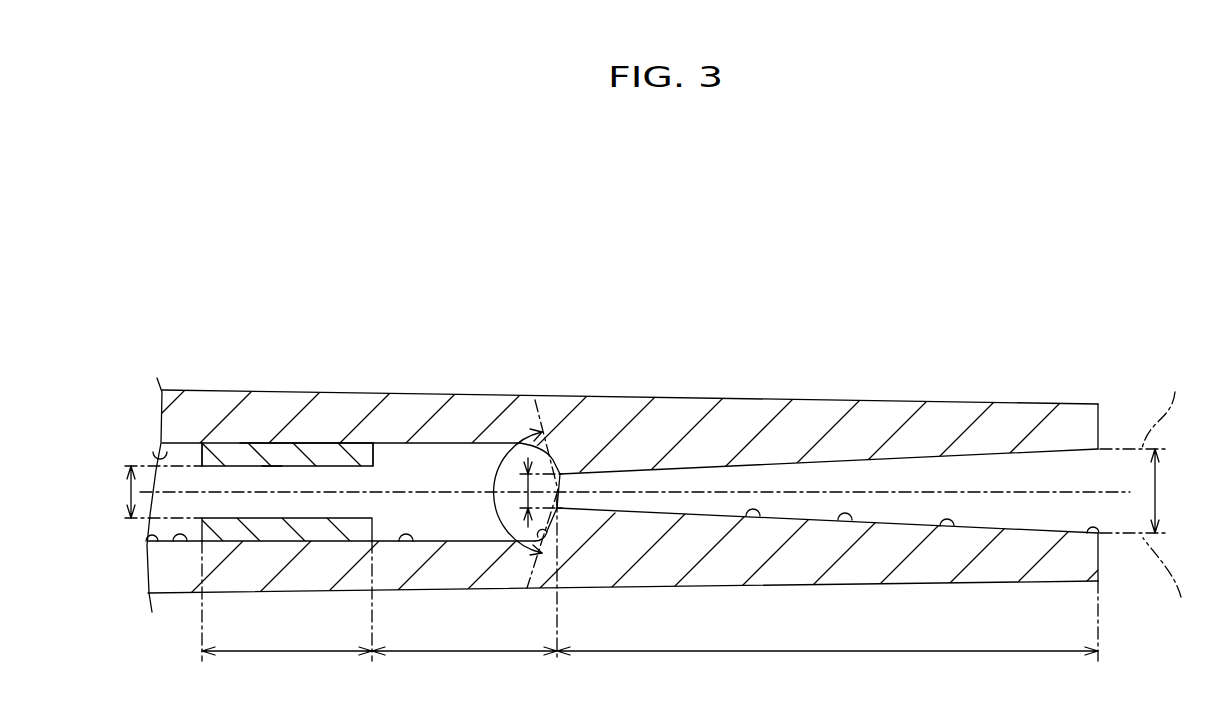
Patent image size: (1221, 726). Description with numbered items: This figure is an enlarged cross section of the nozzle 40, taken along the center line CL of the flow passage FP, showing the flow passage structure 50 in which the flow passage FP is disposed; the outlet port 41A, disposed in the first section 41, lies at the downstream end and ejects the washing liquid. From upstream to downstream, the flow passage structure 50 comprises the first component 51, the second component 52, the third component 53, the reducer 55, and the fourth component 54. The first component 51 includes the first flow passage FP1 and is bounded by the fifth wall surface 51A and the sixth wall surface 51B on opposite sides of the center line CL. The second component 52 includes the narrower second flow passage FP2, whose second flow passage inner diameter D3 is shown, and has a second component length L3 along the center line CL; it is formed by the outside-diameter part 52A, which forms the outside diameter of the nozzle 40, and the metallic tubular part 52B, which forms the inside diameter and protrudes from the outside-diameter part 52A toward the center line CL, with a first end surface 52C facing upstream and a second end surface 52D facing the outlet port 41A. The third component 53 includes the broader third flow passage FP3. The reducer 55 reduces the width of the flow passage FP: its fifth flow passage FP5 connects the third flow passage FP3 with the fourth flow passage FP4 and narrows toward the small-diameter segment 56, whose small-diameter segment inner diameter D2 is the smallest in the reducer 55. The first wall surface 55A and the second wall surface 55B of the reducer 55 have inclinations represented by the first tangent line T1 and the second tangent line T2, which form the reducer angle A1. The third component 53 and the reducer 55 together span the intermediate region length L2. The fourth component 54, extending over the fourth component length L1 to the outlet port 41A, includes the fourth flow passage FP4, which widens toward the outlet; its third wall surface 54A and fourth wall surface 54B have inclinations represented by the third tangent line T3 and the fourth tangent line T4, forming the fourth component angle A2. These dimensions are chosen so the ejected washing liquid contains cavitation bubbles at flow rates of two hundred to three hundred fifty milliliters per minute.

The nozzle 40 is at (980, 281).
The first section 41 is at (878, 402).
The outlet port 41A is at (1100, 532).
The flow passage structure 50 is at (747, 405).
The first component 51 is at (172, 390).
The fifth wall surface 51A is at (157, 452).
The sixth wall surface 51B is at (147, 535).
The second component 52 is at (363, 437).
The outside-diameter part 52A is at (303, 580).
The tubular part 52B is at (313, 447).
The first end surface 52C is at (204, 446).
The second end surface 52D is at (378, 463).
The third component 53 is at (453, 404).
The fourth component 54 is at (818, 408).
The third wall surface 54A is at (990, 457).
The fourth wall surface 54B is at (946, 527).
The reducer 55 is at (548, 452).
The first wall surface 55A is at (521, 442).
The second wall surface 55B is at (549, 540).
The small-diameter segment 56 is at (565, 470).
The center line CL is at (1117, 490).
The first tangent line T1 is at (535, 400).
The second tangent line T2 is at (527, 588).
The third tangent line T3 is at (1167, 405).
The fourth tangent line T4 is at (1170, 584).
The reducer angle A1 is at (497, 482).
The fourth component angle A2 is at (1150, 491).
The small-diameter segment inner diameter D2 is at (524, 500).
The second flow passage inner diameter D3 is at (144, 492).
The fourth component length L1 is at (827, 637).
The intermediate region length L2 is at (464, 597).
The second component length L3 is at (287, 617).
The flow passage FP is at (753, 517).
The first flow passage FP1 is at (178, 542).
The second flow passage FP2 is at (275, 468).
The third flow passage FP3 is at (406, 542).
The fourth flow passage FP4 is at (845, 520).
The fifth flow passage FP5 is at (555, 500).